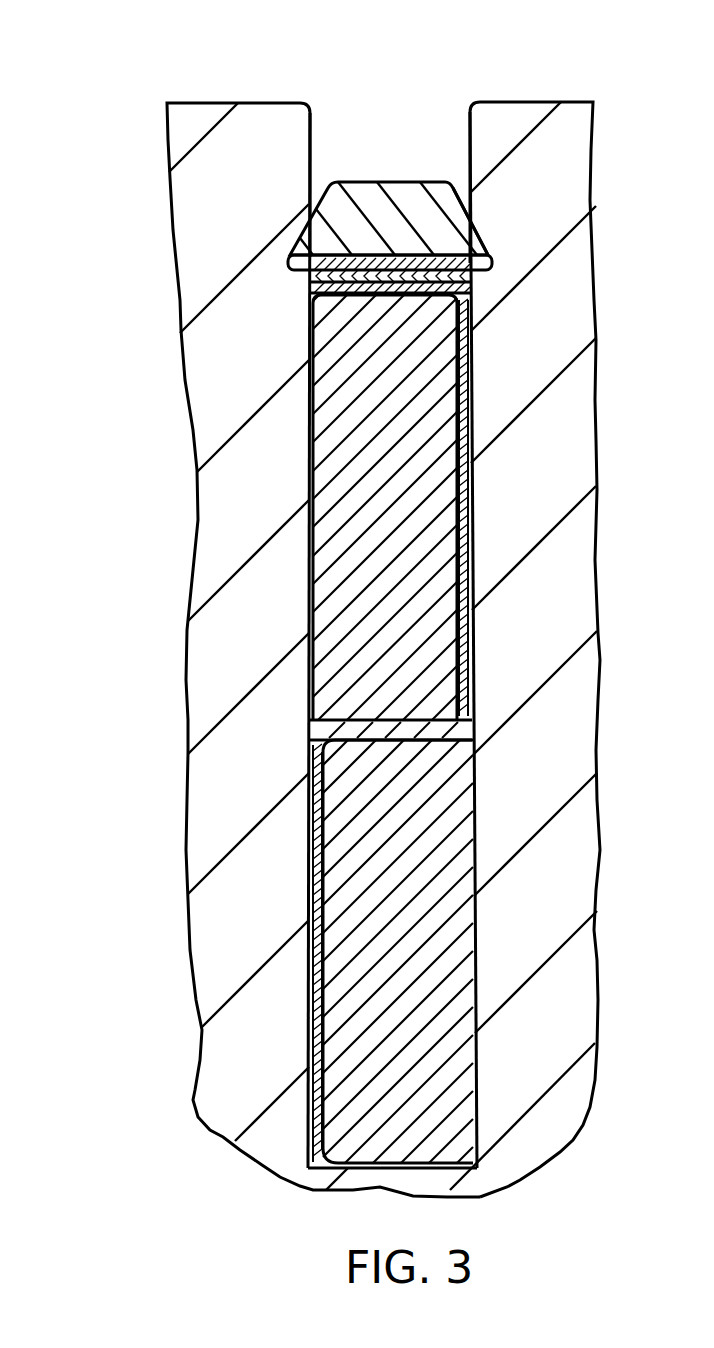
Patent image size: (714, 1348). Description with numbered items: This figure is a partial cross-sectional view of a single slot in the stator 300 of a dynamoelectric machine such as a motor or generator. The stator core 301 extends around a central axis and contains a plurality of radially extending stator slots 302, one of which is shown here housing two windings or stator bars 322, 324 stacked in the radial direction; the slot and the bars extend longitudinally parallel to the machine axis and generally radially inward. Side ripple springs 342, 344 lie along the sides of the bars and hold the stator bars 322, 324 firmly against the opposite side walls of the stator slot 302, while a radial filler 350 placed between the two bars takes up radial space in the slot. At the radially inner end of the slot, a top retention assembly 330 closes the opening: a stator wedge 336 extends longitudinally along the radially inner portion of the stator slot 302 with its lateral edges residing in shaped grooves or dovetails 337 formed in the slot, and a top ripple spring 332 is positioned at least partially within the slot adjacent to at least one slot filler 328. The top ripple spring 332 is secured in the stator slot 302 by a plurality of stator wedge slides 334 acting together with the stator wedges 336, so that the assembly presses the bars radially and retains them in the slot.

The stator 300 is at (146, 27).
The stator core 301 is at (228, 530).
The stator slot 302 is at (467, 122).
The slot filler 328 is at (474, 298).
The top retention assembly 330 is at (280, 271).
The stator wedge 336 is at (347, 180).
The dovetail 337 is at (480, 236).
The stator wedge slide 334 is at (487, 269).
The top ripple spring 332 is at (310, 280).
The stator bar 324 is at (328, 690).
The side ripple spring 344 is at (472, 545).
The radial filler 350 is at (307, 738).
The side ripple spring 342 is at (312, 903).
The stator bar 322 is at (338, 1006).